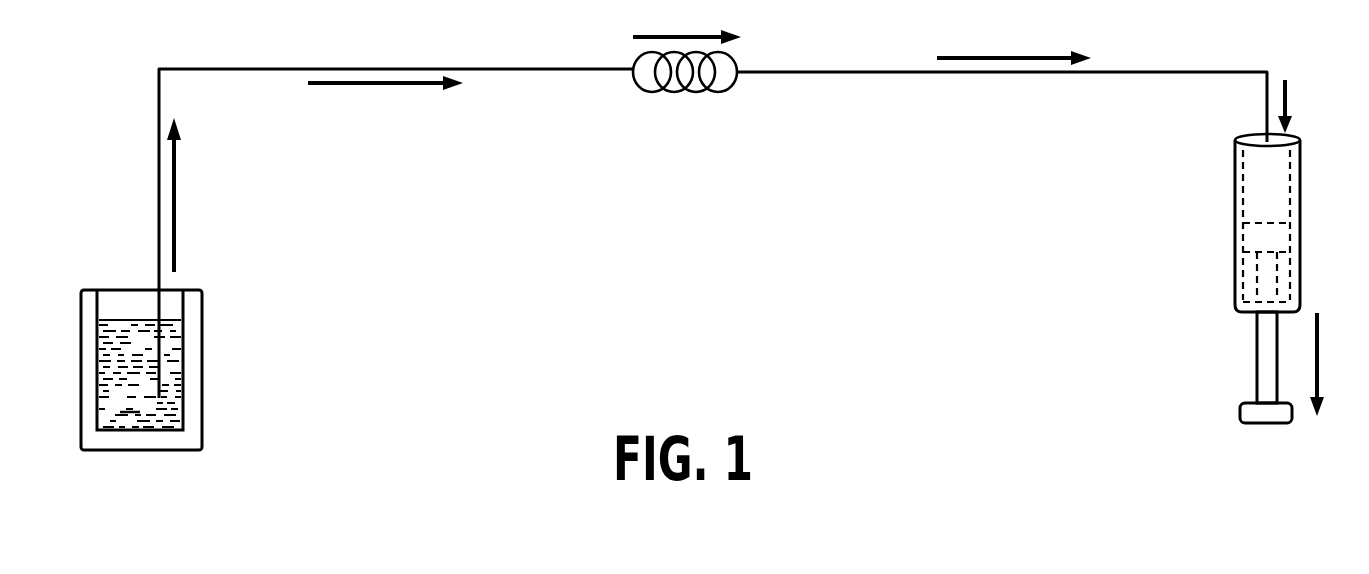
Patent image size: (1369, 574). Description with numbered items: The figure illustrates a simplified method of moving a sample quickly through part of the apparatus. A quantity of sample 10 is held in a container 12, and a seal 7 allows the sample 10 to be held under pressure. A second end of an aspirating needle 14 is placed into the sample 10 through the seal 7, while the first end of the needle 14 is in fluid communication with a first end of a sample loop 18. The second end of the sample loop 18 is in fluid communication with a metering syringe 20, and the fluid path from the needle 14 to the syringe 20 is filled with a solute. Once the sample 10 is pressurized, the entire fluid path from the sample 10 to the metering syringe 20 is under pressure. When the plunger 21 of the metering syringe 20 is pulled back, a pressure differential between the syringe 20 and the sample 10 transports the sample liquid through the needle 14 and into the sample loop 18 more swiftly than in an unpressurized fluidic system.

The seal 7 is at (114, 318).
The sample 10 is at (130, 412).
The container 12 is at (202, 432).
The aspirating needle 14 is at (181, 346).
The sample loop 18 is at (639, 80).
The metering syringe 20 is at (1300, 203).
The plunger 21 is at (1257, 348).